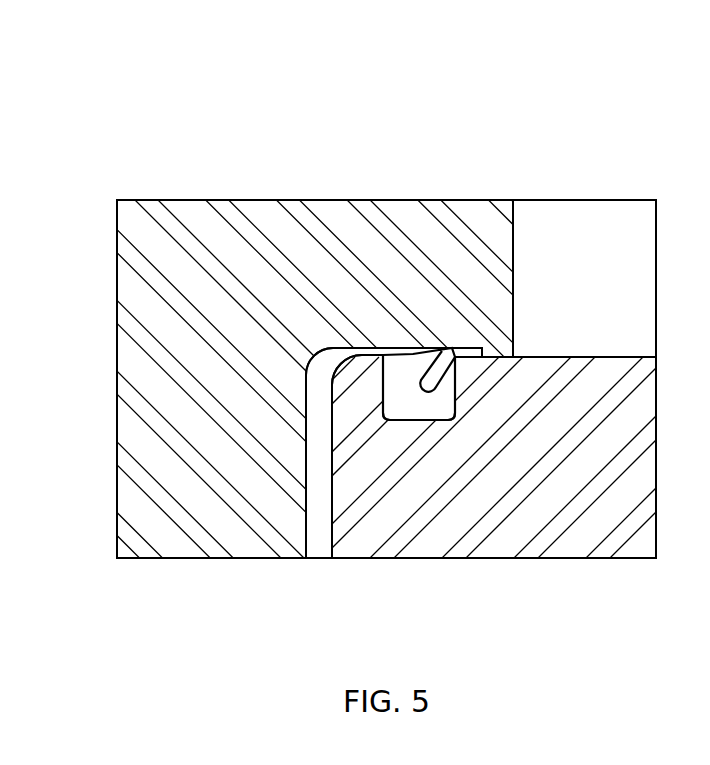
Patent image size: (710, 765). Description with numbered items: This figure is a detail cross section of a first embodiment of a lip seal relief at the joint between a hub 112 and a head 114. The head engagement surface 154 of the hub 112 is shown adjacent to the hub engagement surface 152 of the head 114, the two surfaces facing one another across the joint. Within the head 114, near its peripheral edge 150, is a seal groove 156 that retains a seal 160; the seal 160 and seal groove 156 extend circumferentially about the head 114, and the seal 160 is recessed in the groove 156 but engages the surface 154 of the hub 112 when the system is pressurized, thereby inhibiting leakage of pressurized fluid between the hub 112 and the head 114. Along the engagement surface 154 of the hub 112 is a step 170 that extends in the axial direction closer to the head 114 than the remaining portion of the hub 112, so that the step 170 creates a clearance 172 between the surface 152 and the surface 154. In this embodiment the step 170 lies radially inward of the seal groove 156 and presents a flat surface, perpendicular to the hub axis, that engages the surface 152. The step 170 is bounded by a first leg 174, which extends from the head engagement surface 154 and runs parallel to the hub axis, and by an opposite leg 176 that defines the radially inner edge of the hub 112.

The hub 112 is at (168, 124).
The head 114 is at (594, 582).
The peripheral edge 150 is at (330, 510).
The hub engagement surface 152 is at (558, 355).
The head engagement surface 154 is at (355, 347).
The seal groove 156 is at (412, 421).
The seal 160 is at (397, 403).
The step 170 is at (498, 353).
The clearance 172 is at (370, 353).
The first leg 174 is at (480, 353).
The opposite leg 176 is at (513, 253).